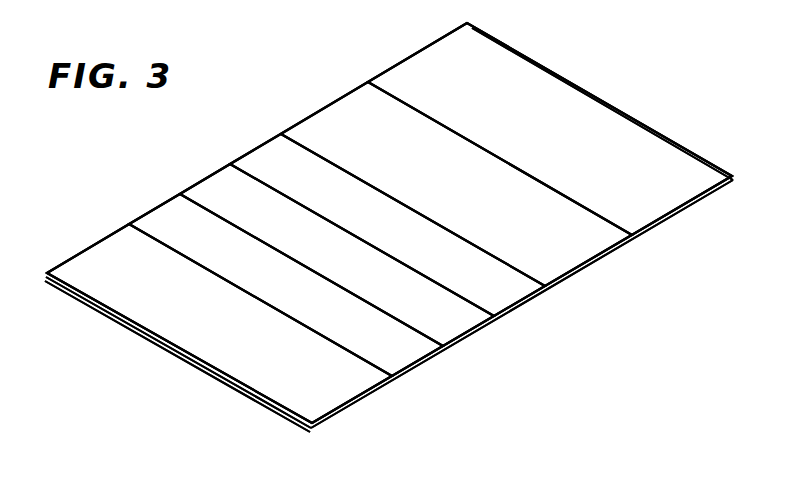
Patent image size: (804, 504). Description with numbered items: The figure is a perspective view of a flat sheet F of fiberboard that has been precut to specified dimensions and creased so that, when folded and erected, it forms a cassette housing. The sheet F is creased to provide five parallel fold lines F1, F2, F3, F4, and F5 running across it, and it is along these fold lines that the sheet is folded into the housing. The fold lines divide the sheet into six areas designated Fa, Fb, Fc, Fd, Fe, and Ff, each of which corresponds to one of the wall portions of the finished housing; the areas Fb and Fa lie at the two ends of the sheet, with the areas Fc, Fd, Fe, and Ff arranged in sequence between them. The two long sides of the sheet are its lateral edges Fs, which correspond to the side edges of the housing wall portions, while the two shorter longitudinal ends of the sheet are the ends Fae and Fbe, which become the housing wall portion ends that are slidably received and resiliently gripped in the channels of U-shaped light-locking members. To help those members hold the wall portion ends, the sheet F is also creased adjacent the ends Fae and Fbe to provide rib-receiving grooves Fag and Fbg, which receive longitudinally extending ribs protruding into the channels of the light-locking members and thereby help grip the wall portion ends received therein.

The flat sheet F is at (514, 326).
The sheet area Fa is at (498, 108).
The sheet area Fb is at (200, 315).
The sheet area Fc is at (258, 272).
The sheet area Fd is at (300, 237).
The sheet area Fe is at (350, 207).
The sheet area Ff is at (417, 166).
The fold line F1 is at (327, 339).
The fold line F2 is at (380, 310).
The fold line F3 is at (421, 279).
The fold line F4 is at (481, 247).
The fold line F5 is at (582, 206).
The lateral edges Fs is at (331, 104).
The longitudinal end Fae is at (599, 99).
The rib-receiving groove Fag is at (569, 86).
The longitudinal end Fbe is at (174, 352).
The rib-receiving groove Fbg is at (253, 388).